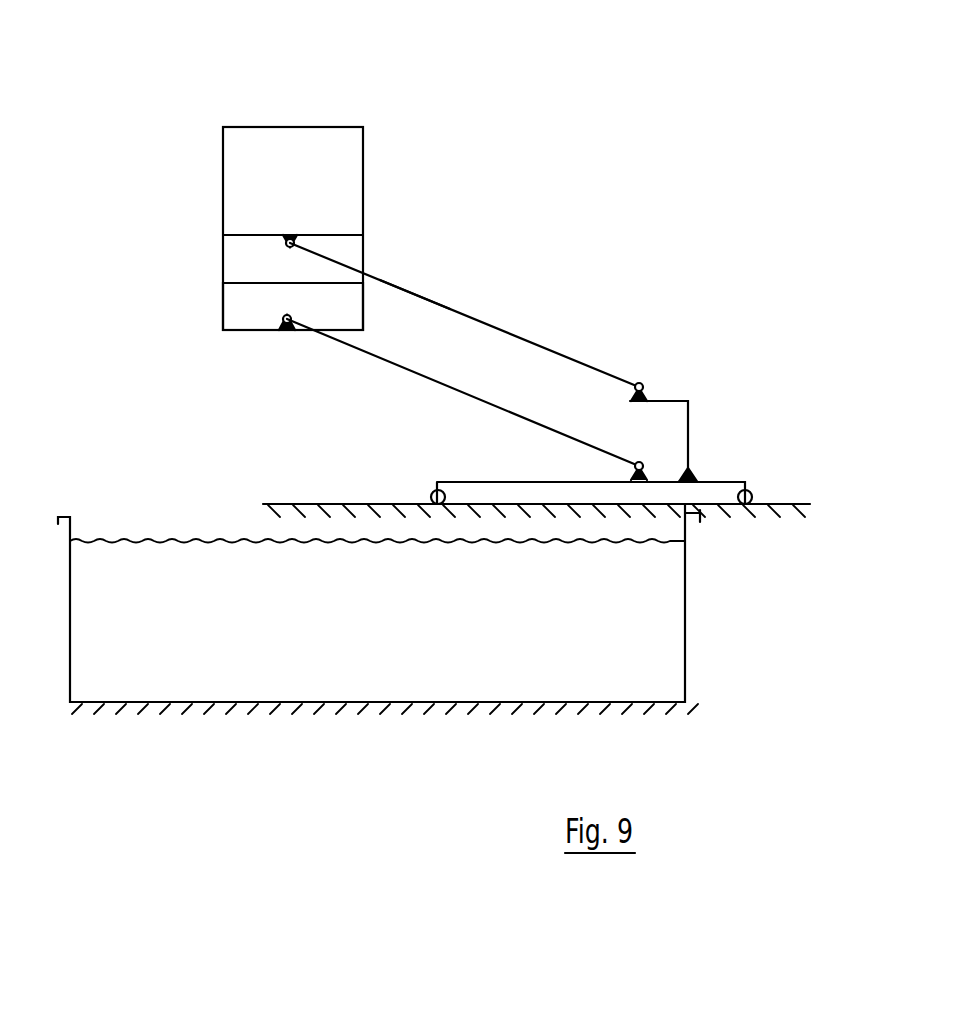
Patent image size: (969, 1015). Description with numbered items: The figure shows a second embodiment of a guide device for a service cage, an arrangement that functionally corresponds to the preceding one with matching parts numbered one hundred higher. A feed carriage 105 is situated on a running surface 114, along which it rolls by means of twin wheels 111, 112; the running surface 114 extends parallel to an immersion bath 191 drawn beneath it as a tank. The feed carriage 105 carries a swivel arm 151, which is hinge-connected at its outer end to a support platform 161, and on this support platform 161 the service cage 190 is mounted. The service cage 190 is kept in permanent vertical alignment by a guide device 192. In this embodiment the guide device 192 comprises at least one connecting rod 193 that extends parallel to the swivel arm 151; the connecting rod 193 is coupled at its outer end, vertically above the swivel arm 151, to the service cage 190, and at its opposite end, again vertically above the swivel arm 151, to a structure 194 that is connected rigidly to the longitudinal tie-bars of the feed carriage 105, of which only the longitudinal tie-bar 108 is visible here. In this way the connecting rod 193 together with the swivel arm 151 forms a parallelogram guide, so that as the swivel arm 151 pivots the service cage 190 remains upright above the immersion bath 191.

The service cage 190 is at (278, 158).
The support platform 161 is at (258, 297).
The feed carriage 105 is at (511, 276).
The guide device 192 is at (415, 292).
The connecting rod 193 is at (483, 318).
The swivel arm 151 is at (523, 412).
The structure 194 is at (660, 400).
The longitudinal tie-bar 108 is at (545, 483).
The twin wheel 112 is at (442, 504).
The twin wheel 111 is at (748, 504).
The running surface 114 is at (788, 503).
The immersion bath 191 is at (223, 608).